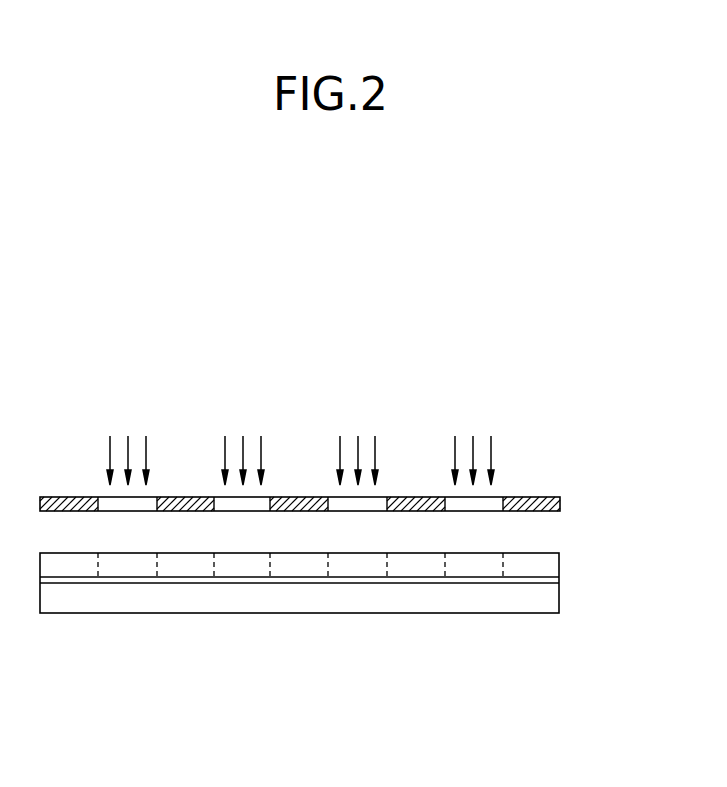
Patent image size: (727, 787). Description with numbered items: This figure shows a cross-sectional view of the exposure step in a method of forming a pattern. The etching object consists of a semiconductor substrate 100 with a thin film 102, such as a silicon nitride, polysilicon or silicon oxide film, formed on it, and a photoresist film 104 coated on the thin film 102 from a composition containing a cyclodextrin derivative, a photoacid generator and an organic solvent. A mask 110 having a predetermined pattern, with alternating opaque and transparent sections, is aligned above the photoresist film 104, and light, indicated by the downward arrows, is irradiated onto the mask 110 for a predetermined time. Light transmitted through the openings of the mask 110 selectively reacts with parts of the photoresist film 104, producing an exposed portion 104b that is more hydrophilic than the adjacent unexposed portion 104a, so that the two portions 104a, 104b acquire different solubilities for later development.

The mask 110 is at (560, 503).
The semiconductor substrate 100 is at (550, 605).
The thin film 102 is at (559, 578).
The photoresist film 104 is at (300, 628).
The unexposed portion 104a is at (422, 565).
The exposed portion 104b is at (358, 565).